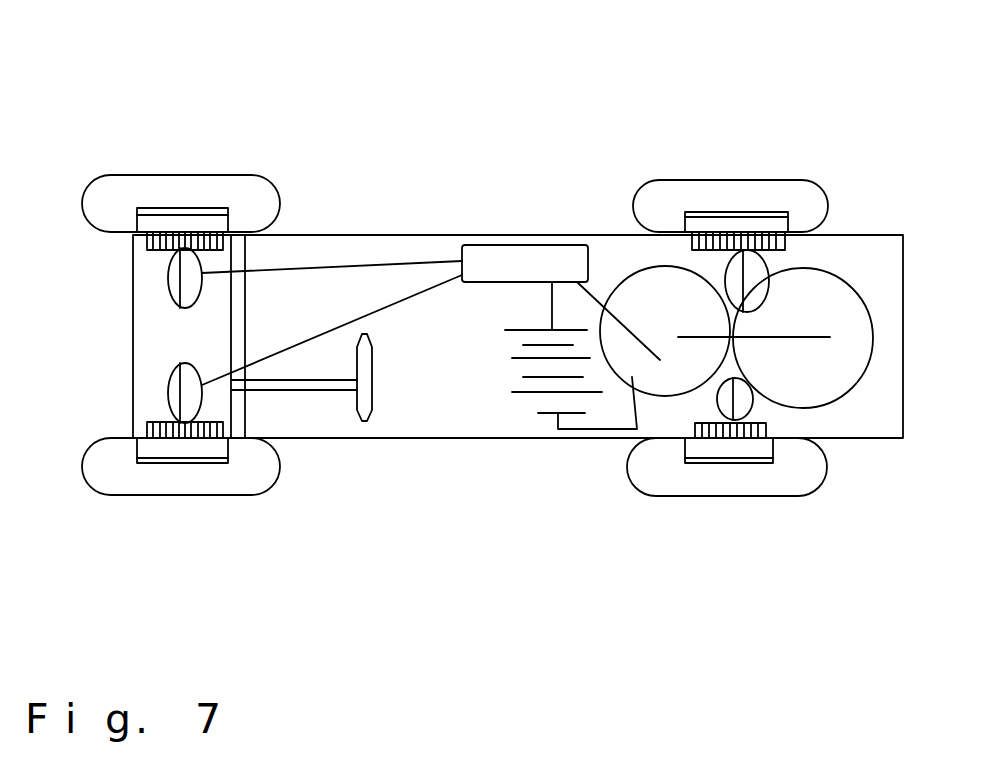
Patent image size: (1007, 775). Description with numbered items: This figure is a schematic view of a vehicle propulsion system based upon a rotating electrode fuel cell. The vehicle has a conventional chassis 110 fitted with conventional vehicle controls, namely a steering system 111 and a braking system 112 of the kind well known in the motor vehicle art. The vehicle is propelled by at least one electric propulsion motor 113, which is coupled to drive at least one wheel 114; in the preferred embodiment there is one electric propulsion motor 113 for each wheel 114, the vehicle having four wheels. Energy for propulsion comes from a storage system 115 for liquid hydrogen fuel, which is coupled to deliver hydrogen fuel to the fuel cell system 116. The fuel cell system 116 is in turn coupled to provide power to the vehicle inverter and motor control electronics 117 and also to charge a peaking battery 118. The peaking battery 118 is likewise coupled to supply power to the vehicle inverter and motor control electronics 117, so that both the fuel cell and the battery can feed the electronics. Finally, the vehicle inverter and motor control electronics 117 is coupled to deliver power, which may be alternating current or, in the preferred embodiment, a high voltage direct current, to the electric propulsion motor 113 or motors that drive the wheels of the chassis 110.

The chassis 110 is at (492, 280).
The steering system 111 is at (318, 463).
The braking system 112 is at (730, 189).
The electric propulsion motor 113 is at (181, 166).
The wheel 114 is at (725, 485).
The storage system 115 is at (784, 430).
The fuel cell system 116 is at (638, 231).
The vehicle inverter and motor control electronics 117 is at (505, 174).
The peaking battery 118 is at (562, 437).